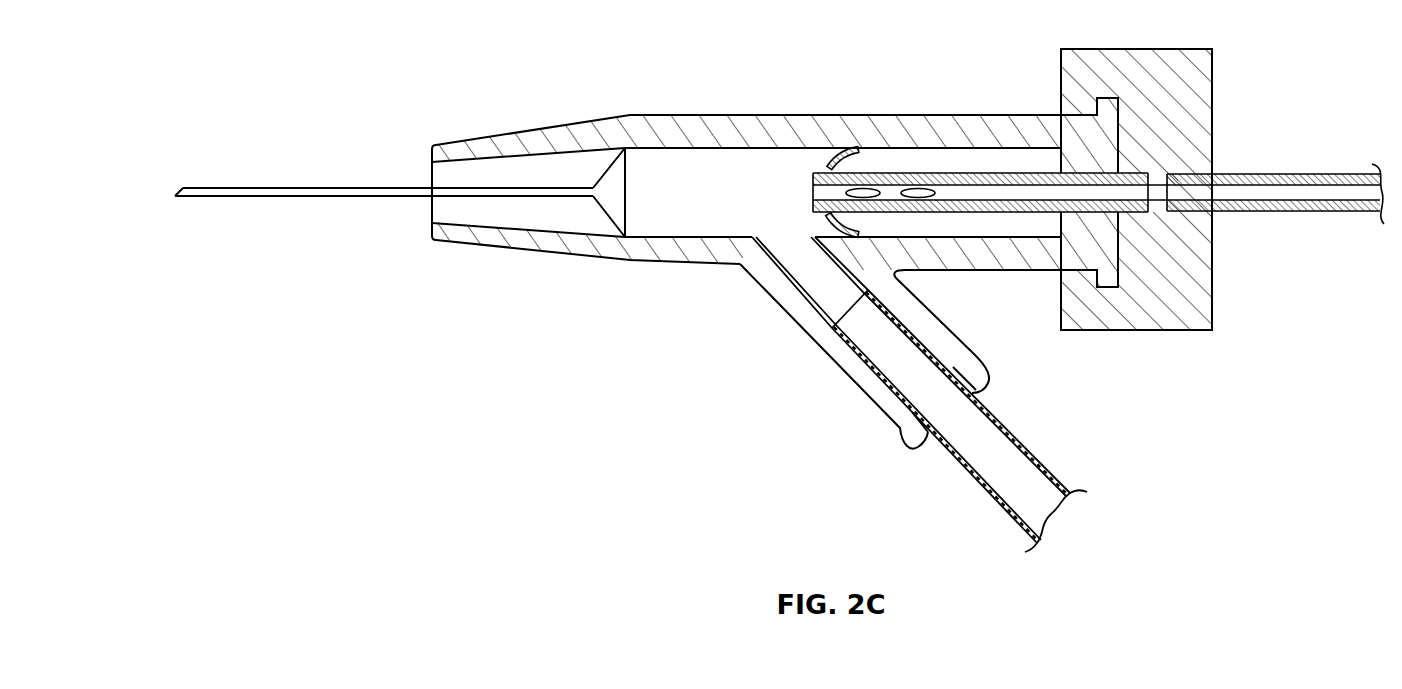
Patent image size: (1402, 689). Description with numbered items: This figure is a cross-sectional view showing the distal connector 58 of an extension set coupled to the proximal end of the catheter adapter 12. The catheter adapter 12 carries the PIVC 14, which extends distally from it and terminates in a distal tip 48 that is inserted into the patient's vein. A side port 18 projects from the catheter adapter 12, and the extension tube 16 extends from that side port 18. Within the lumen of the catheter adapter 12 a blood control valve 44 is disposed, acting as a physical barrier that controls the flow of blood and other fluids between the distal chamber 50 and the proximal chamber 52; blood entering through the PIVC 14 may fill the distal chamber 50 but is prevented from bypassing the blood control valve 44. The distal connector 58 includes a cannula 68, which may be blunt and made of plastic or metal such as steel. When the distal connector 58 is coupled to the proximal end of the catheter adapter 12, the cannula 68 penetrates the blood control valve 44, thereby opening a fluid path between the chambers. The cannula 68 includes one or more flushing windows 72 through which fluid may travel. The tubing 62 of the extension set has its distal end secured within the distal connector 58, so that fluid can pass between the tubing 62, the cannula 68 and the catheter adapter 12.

The catheter adapter 12 is at (752, 118).
The PIVC 14 is at (218, 186).
The extension tube 16 is at (1015, 437).
The side port 18 is at (897, 438).
The blood control valve 44 is at (837, 216).
The distal tip 48 is at (178, 197).
The distal chamber 50 is at (703, 205).
The proximal chamber 52 is at (980, 160).
The distal connector 58 is at (1198, 100).
The tubing 62 is at (1345, 175).
The cannula 68 is at (1060, 107).
The flushing windows 72 is at (912, 191).